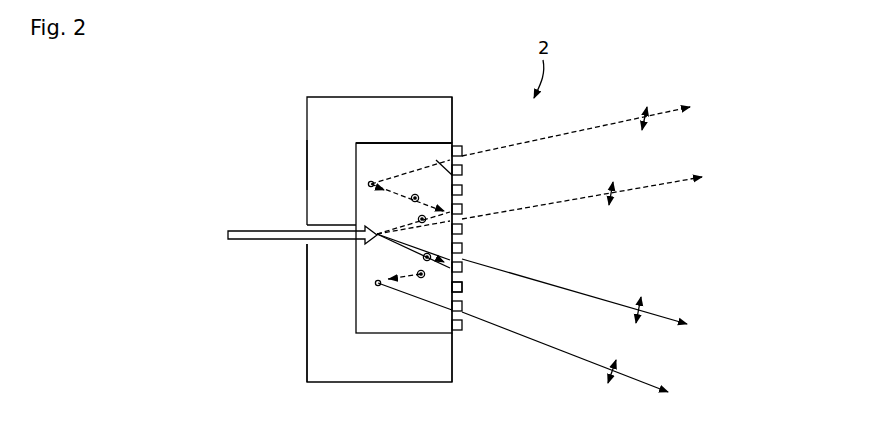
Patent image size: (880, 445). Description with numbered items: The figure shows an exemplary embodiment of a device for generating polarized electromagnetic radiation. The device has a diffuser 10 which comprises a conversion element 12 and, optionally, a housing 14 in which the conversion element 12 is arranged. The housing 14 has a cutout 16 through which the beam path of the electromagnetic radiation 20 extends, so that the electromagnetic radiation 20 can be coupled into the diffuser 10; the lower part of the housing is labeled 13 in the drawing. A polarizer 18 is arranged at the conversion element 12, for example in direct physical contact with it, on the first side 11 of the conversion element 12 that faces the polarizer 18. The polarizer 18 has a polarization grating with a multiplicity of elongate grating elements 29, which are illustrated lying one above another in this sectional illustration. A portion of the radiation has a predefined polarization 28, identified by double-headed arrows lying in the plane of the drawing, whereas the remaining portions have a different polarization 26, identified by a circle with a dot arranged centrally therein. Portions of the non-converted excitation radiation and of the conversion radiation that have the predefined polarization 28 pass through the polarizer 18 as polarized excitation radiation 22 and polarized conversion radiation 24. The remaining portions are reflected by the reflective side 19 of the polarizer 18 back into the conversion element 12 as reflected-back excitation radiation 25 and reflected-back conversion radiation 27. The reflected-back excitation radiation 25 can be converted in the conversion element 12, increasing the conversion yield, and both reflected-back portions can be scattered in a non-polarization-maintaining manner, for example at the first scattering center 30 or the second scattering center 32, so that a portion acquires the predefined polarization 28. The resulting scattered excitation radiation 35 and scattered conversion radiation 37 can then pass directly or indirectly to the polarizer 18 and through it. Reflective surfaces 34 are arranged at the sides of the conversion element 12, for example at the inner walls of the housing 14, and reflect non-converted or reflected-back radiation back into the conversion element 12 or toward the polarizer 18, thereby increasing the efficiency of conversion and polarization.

The diffuser 10 is at (439, 93).
The first side 11 is at (452, 355).
The conversion element 12 is at (402, 143).
The lower housing part 13 is at (307, 340).
The housing 14 is at (307, 165).
The cutout 16 is at (330, 224).
The polarizer 18 is at (457, 145).
The reflective side 19 is at (442, 168).
The electromagnetic radiation 20 is at (250, 241).
The polarized excitation radiation 22 is at (622, 302).
The polarized conversion radiation 24 is at (657, 108).
The reflected-back excitation radiation 25 is at (462, 283).
The different polarization 26 is at (417, 219).
The reflected-back conversion radiation 27 is at (463, 197).
The predefined polarization 28 is at (647, 127).
The grating elements 29 is at (462, 247).
The first scattering center 30 is at (374, 286).
The second scattering center 32 is at (366, 184).
The reflective surfaces 34 is at (362, 143).
The scattered excitation radiation 35 is at (393, 288).
The scattered conversion radiation 37 is at (402, 170).